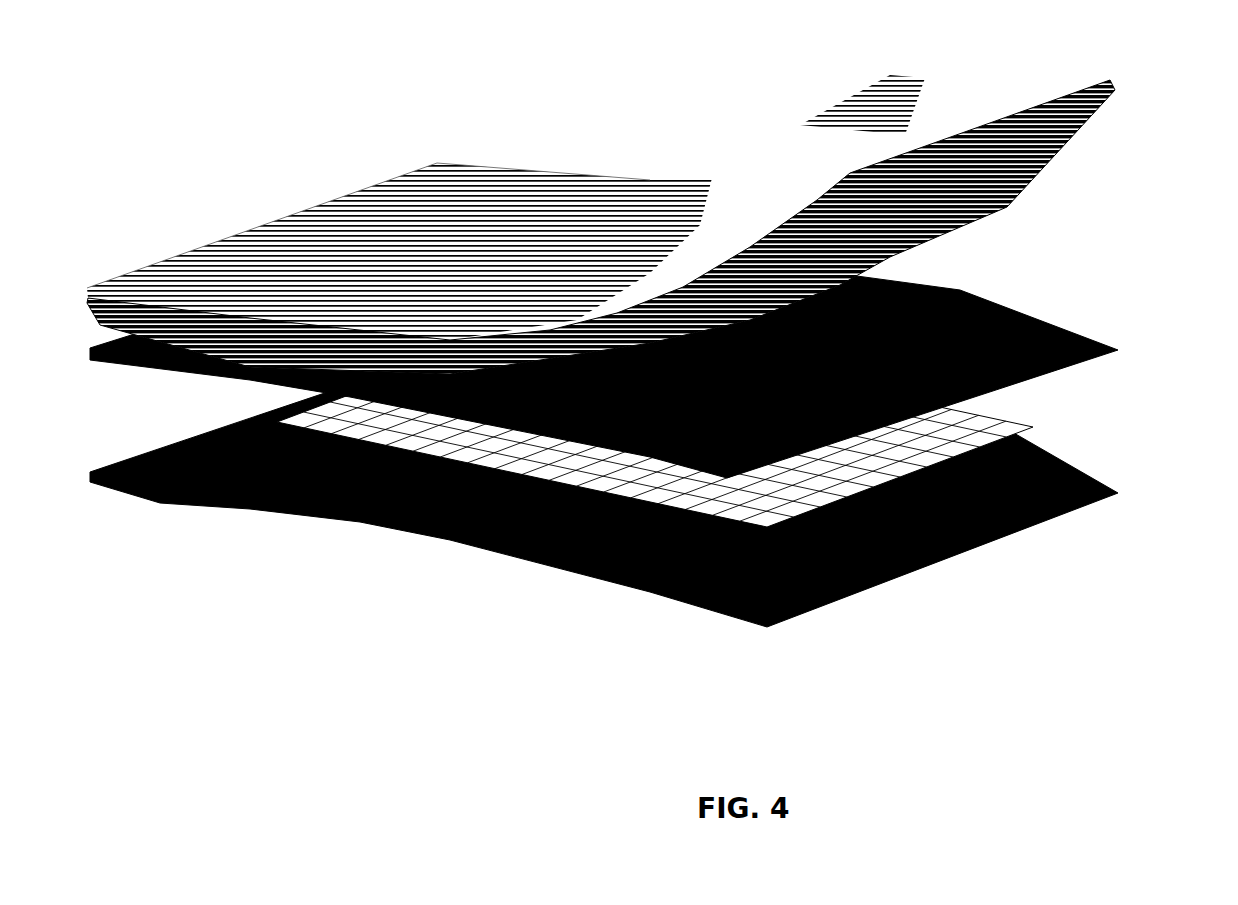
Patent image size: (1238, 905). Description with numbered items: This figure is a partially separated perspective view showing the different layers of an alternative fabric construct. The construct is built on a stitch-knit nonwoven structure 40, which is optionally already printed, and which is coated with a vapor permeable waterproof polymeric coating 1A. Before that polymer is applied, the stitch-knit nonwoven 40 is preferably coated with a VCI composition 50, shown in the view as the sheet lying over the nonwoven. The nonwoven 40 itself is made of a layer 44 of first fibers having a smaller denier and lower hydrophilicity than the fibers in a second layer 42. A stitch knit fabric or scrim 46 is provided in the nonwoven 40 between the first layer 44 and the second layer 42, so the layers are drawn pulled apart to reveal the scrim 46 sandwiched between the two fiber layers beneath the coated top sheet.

The vapor permeable waterproof polymeric coating 1A is at (793, 120).
The VCI composition 50 is at (1110, 100).
The second layer 42 is at (1022, 307).
The layer of first fibers 44 is at (1066, 528).
The stitch knit fabric or scrim 46 is at (657, 583).
The stitch-knit nonwoven structure 40 is at (1128, 523).